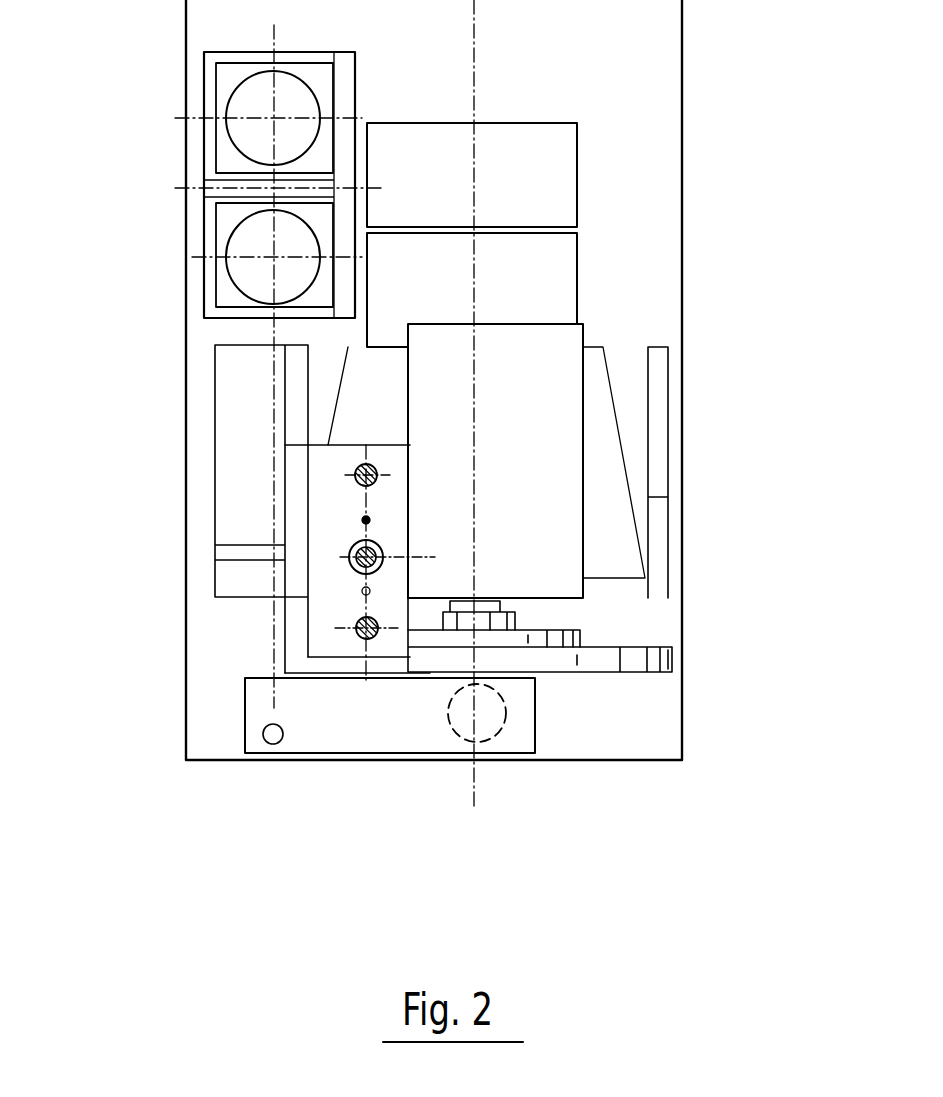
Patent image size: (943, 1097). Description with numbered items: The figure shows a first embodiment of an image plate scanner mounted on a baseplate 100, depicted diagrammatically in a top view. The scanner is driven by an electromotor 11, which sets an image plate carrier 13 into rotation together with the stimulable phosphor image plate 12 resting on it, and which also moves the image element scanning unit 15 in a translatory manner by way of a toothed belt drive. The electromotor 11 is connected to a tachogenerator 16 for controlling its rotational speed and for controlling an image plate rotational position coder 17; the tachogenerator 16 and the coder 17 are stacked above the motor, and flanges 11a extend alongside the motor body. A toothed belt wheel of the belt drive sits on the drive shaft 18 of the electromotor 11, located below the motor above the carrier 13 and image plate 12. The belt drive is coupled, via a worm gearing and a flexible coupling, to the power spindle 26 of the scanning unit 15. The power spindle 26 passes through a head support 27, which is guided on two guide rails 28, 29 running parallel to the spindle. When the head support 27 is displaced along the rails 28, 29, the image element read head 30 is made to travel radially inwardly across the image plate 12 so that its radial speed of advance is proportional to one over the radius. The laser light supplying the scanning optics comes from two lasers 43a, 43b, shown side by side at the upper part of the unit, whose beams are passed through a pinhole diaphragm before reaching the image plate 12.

The baseplate 100 is at (655, 723).
The laser 43a is at (230, 105).
The laser 43b is at (230, 250).
The image plate rotational position coder 17 is at (555, 158).
The tachogenerator 16 is at (545, 280).
The electromotor 11 is at (562, 485).
The guide flanges 11a is at (597, 415).
The head support 27 is at (323, 615).
The guide rail 29 is at (355, 472).
The power spindle 26 is at (435, 556).
The guide rail 28 is at (362, 632).
The drive shaft 18 is at (500, 598).
The image plate carrier 13 is at (575, 633).
The stimulable phosphor image plate 12 is at (650, 660).
The image element scanning unit 15 is at (363, 742).
The image element read head 30 is at (488, 742).